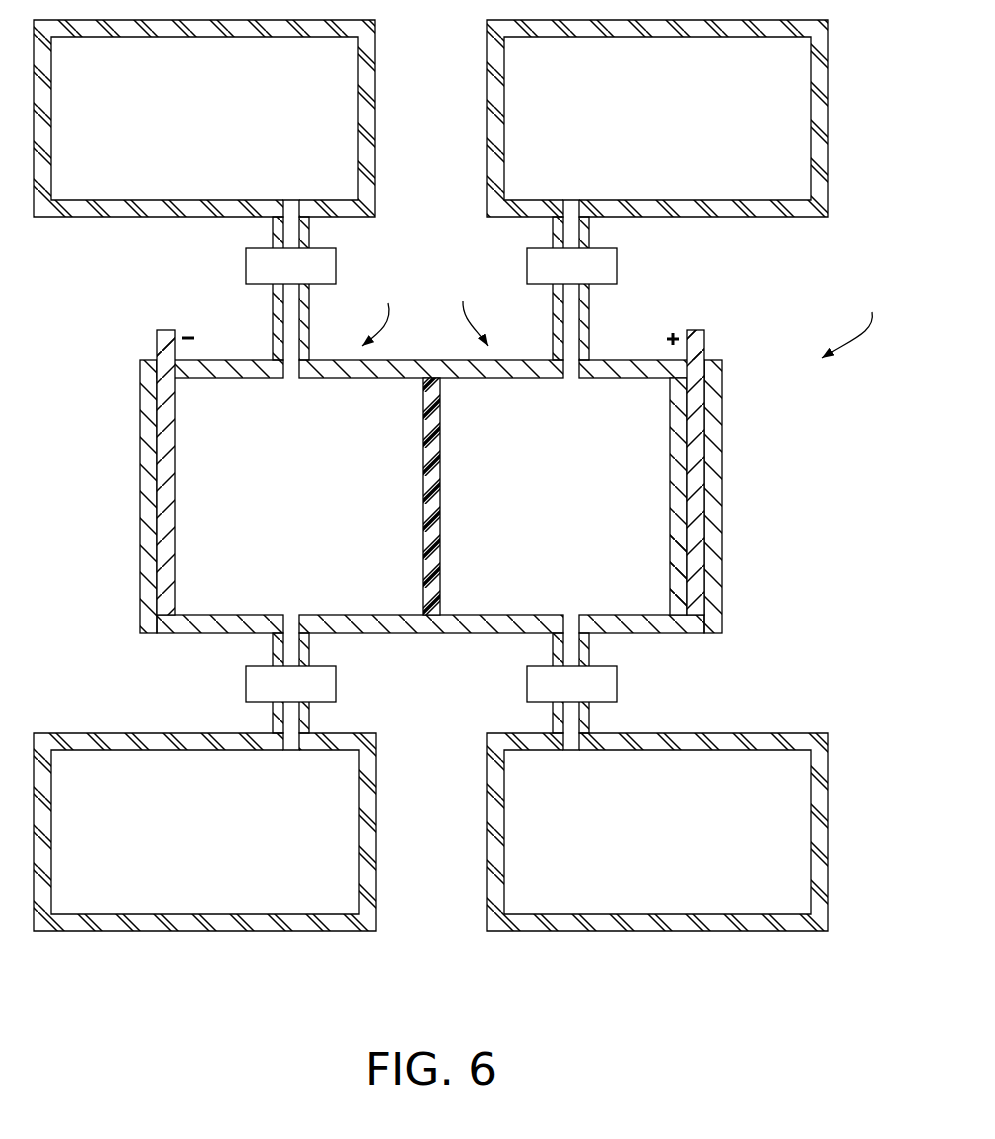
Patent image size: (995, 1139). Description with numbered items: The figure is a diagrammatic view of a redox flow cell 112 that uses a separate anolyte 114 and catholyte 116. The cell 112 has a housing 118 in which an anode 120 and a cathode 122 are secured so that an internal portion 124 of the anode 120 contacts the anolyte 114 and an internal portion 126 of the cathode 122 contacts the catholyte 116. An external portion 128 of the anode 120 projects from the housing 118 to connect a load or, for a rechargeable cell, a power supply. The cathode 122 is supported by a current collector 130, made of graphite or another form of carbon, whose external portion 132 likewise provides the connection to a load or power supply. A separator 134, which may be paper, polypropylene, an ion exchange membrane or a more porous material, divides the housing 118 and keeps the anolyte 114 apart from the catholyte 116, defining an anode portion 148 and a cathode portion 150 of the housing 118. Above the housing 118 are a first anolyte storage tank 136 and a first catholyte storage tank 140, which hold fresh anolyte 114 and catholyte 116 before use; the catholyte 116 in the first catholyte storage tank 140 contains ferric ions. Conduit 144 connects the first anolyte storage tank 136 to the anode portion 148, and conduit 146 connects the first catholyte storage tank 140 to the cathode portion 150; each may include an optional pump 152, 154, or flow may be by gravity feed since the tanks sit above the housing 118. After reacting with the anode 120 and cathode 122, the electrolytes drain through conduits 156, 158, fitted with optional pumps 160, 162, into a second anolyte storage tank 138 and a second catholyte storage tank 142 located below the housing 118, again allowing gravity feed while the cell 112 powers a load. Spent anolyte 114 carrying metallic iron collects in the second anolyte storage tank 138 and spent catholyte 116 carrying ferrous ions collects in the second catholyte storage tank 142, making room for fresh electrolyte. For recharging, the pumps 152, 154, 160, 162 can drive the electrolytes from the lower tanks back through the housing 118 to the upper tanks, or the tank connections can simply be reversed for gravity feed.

The redox flow cell 112 is at (856, 322).
The anolyte 114 is at (188, 131).
The catholyte 116 is at (642, 131).
The housing 118 is at (713, 483).
The anode 120 is at (166, 545).
The cathode 122 is at (680, 507).
The internal portion of the anode 124 is at (166, 453).
The internal portion of the cathode 126 is at (680, 547).
The external portion of the anode 128 is at (157, 342).
The current collector 130 is at (697, 415).
The external portion of the current collector 132 is at (704, 340).
The separator 134 is at (440, 402).
The first anolyte storage tank 136 is at (290, 80).
The second anolyte storage tank 138 is at (292, 788).
The first catholyte storage tank 140 is at (745, 80).
The second catholyte storage tank 142 is at (743, 791).
The conduit 144 is at (310, 231).
The conduit 146 is at (554, 237).
The anode portion of the housing 148 is at (384, 312).
The cathode portion of the housing 150 is at (467, 311).
The pump 152 is at (246, 268).
The pump 154 is at (617, 262).
The conduit 156 is at (309, 650).
The conduit 158 is at (553, 652).
The pump 160 is at (246, 686).
The pump 162 is at (616, 684).